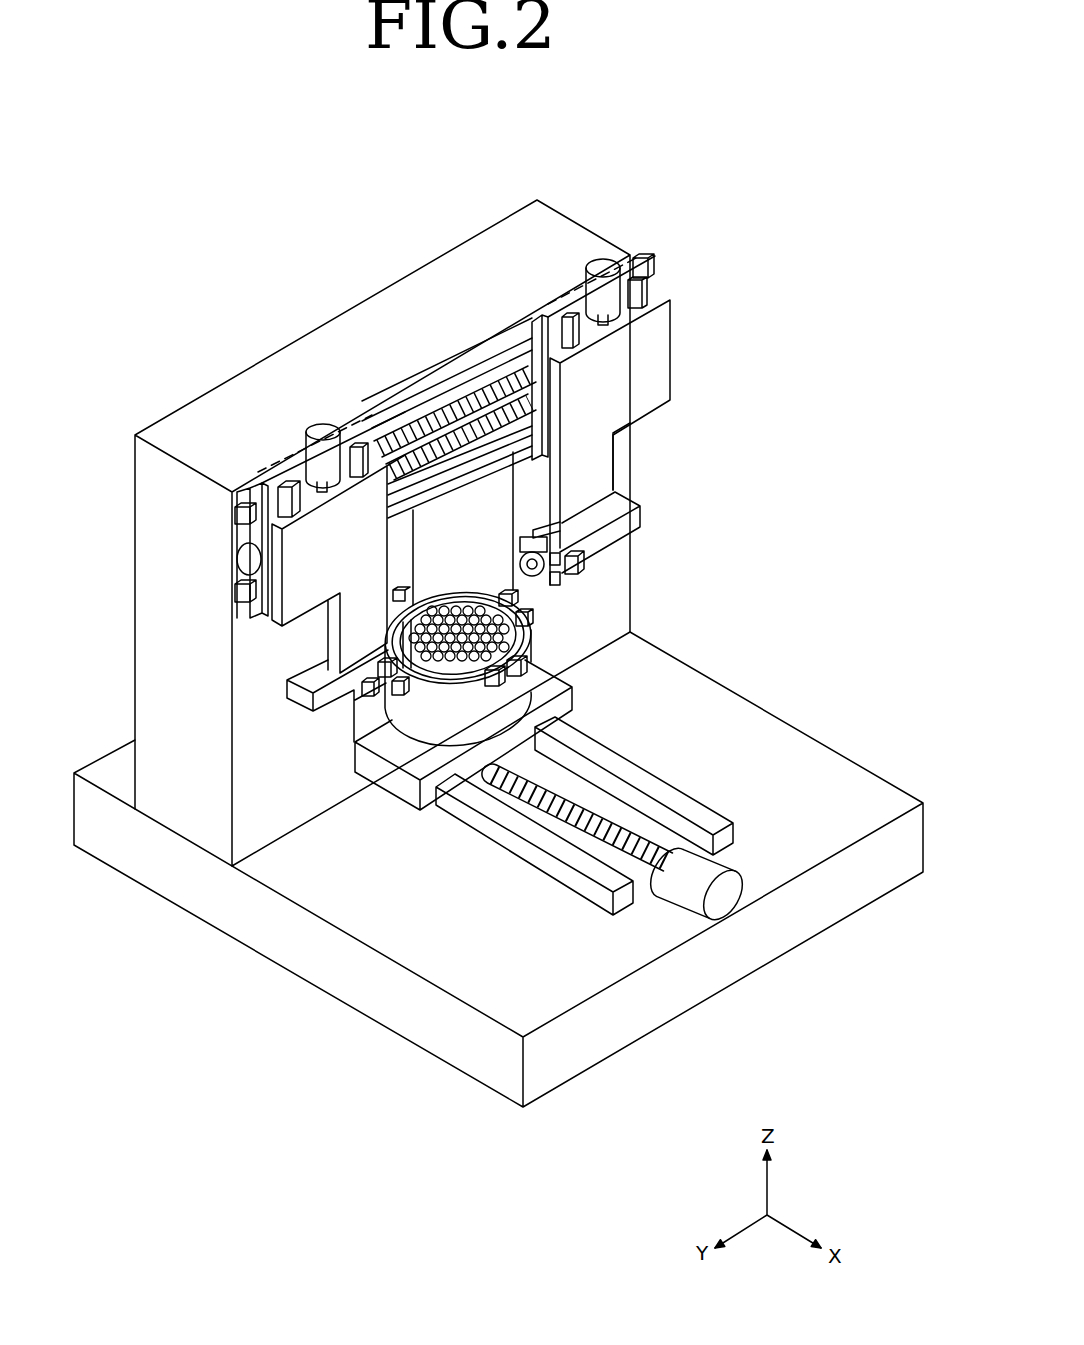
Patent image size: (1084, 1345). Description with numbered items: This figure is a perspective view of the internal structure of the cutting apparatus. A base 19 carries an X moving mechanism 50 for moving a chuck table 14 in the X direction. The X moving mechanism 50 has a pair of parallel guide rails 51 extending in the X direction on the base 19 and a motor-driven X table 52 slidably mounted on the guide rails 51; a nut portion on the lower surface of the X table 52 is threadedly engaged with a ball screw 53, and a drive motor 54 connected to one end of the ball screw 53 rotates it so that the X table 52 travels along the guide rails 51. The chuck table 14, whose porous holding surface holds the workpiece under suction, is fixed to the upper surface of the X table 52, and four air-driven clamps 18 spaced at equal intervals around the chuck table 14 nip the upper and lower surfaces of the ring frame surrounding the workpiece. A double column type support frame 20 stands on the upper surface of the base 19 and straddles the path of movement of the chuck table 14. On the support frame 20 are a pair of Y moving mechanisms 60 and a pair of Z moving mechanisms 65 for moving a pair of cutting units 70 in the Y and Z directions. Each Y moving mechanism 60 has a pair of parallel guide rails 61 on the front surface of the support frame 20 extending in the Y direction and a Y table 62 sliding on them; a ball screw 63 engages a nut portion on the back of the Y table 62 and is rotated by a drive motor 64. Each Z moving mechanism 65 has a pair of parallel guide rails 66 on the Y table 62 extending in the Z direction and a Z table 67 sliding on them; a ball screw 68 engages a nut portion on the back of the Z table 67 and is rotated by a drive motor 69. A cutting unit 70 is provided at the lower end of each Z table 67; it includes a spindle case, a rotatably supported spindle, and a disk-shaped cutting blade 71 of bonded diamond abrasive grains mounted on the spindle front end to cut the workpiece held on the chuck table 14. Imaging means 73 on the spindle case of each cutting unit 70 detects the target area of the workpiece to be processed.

The chuck table 14 is at (440, 582).
The clamp 18 is at (503, 597).
The base 19 is at (784, 733).
The support frame 20 is at (563, 227).
The X moving mechanism 50 is at (613, 824).
The guide rails 51 is at (710, 807).
The X table 52 is at (560, 690).
The ball screw 53 is at (573, 790).
The drive motor 54 is at (727, 897).
The Y moving mechanism 60 is at (228, 549).
The guide rails 61 is at (233, 517).
The Y table 62 is at (262, 485).
The ball screw 63 is at (447, 448).
The drive motor 64 is at (236, 565).
The Z moving mechanism 65 is at (287, 453).
The guide rails 66 is at (285, 480).
The Z table 67 is at (300, 607).
The ball screw 68 is at (307, 481).
The drive motor 69 is at (323, 425).
The cutting unit 70 is at (281, 703).
The cutting blade 71 is at (530, 582).
The imaging means 73 is at (394, 672).